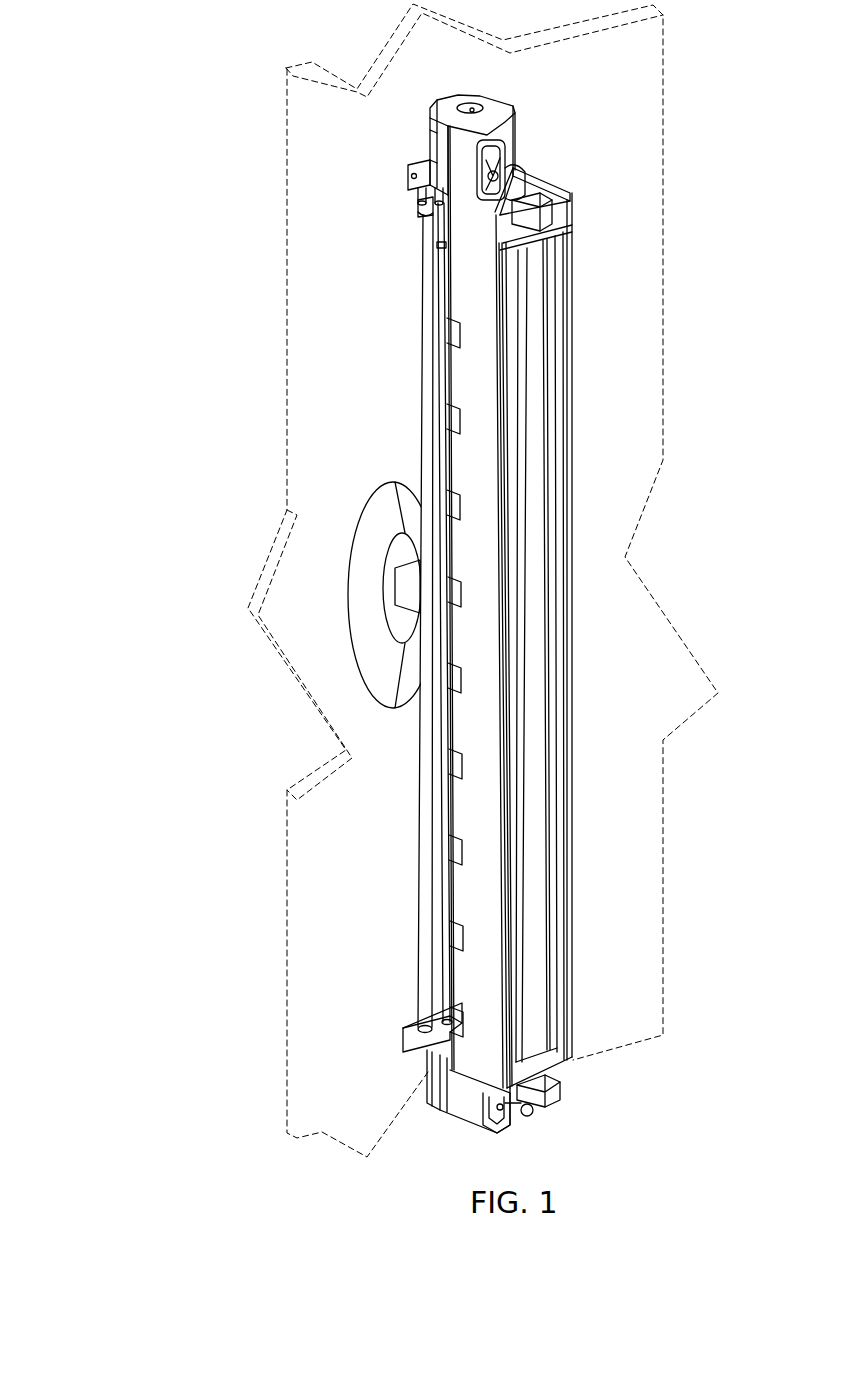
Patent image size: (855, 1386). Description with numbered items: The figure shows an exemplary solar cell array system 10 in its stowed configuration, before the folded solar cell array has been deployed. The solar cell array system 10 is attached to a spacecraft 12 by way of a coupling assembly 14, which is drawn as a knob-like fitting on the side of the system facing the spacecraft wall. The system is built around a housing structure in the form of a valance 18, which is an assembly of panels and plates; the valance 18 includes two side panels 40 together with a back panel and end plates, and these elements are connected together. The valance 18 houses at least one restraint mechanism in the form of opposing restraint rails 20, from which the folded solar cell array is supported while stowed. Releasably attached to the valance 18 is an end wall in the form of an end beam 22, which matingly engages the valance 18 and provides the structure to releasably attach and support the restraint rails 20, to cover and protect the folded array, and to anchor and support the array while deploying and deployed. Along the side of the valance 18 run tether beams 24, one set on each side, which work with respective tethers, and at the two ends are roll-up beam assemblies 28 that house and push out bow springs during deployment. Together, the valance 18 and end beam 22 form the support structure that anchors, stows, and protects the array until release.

The solar cell array system 10 is at (595, 300).
The spacecraft 12 is at (672, 137).
The coupling assembly 14 is at (382, 591).
The valance 18 is at (538, 167).
The restraint rails 20 is at (572, 229).
The end beam 22 is at (565, 513).
The tether beams 24 is at (443, 312).
The roll-up beam assemblies 28 is at (489, 112).
The side panels 40 is at (489, 739).